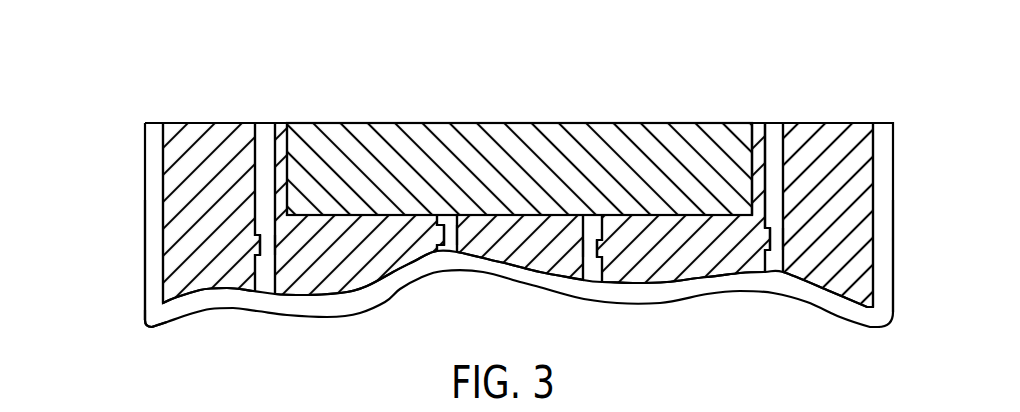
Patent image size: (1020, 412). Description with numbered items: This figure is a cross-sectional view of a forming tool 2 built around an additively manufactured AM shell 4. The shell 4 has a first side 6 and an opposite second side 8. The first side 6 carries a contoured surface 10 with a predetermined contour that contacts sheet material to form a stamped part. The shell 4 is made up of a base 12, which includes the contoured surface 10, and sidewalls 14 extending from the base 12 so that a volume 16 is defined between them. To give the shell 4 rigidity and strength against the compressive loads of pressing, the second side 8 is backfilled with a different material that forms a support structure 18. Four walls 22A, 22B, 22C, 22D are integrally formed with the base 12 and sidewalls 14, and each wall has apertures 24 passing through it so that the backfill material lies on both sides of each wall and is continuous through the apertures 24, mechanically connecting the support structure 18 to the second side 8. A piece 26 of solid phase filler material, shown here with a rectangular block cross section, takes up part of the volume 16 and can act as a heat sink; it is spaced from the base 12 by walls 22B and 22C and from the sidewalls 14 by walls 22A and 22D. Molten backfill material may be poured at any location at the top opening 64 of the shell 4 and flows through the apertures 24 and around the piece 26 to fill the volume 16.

The forming tool 2 is at (78, 108).
The AM shell 4 is at (150, 330).
The first side 6 is at (140, 258).
The second side 8 is at (216, 278).
The contoured surface 10 is at (538, 296).
The base 12 is at (363, 297).
The sidewalls 14 is at (152, 200).
The volume 16 is at (684, 238).
The support structure 18 is at (811, 135).
The wall 22A is at (257, 149).
The wall 22B is at (440, 223).
The wall 22C is at (600, 231).
The wall 22D is at (778, 255).
The apertures 24 is at (282, 255).
The piece of solid phase filler material 26 is at (597, 145).
The top opening 64 is at (823, 106).